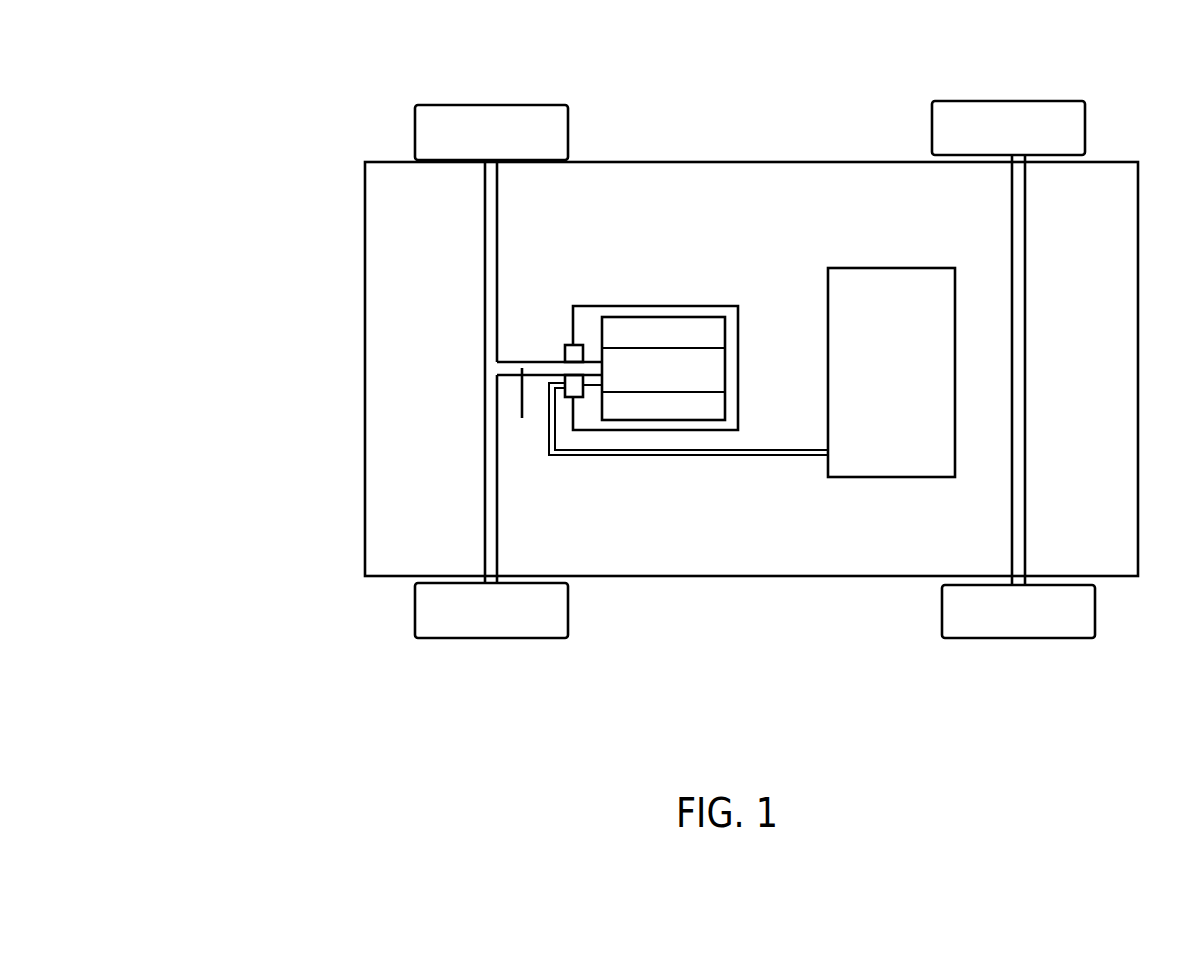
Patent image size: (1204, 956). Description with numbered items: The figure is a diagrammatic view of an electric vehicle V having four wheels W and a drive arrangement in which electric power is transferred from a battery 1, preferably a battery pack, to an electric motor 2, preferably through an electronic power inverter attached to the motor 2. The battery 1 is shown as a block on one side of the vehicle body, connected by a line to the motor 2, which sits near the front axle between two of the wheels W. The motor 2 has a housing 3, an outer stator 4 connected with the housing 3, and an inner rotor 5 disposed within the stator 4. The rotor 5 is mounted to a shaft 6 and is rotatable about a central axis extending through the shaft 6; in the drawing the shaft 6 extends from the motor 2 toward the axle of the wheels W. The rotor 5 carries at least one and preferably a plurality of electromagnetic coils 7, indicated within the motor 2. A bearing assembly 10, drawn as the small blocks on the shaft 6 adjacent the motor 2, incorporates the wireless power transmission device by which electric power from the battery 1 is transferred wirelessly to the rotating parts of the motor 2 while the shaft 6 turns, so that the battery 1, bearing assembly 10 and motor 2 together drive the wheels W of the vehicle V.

The electric vehicle V is at (282, 96).
The wheels W is at (531, 116).
The battery 1 is at (880, 250).
The electric motor 2 is at (649, 290).
The housing 3 is at (708, 288).
The outer stator 4 is at (728, 330).
The inner rotor 5 is at (728, 367).
The shaft 6 is at (550, 410).
The electromagnetic coils 7 is at (693, 383).
The bearing assembly 10 is at (548, 340).